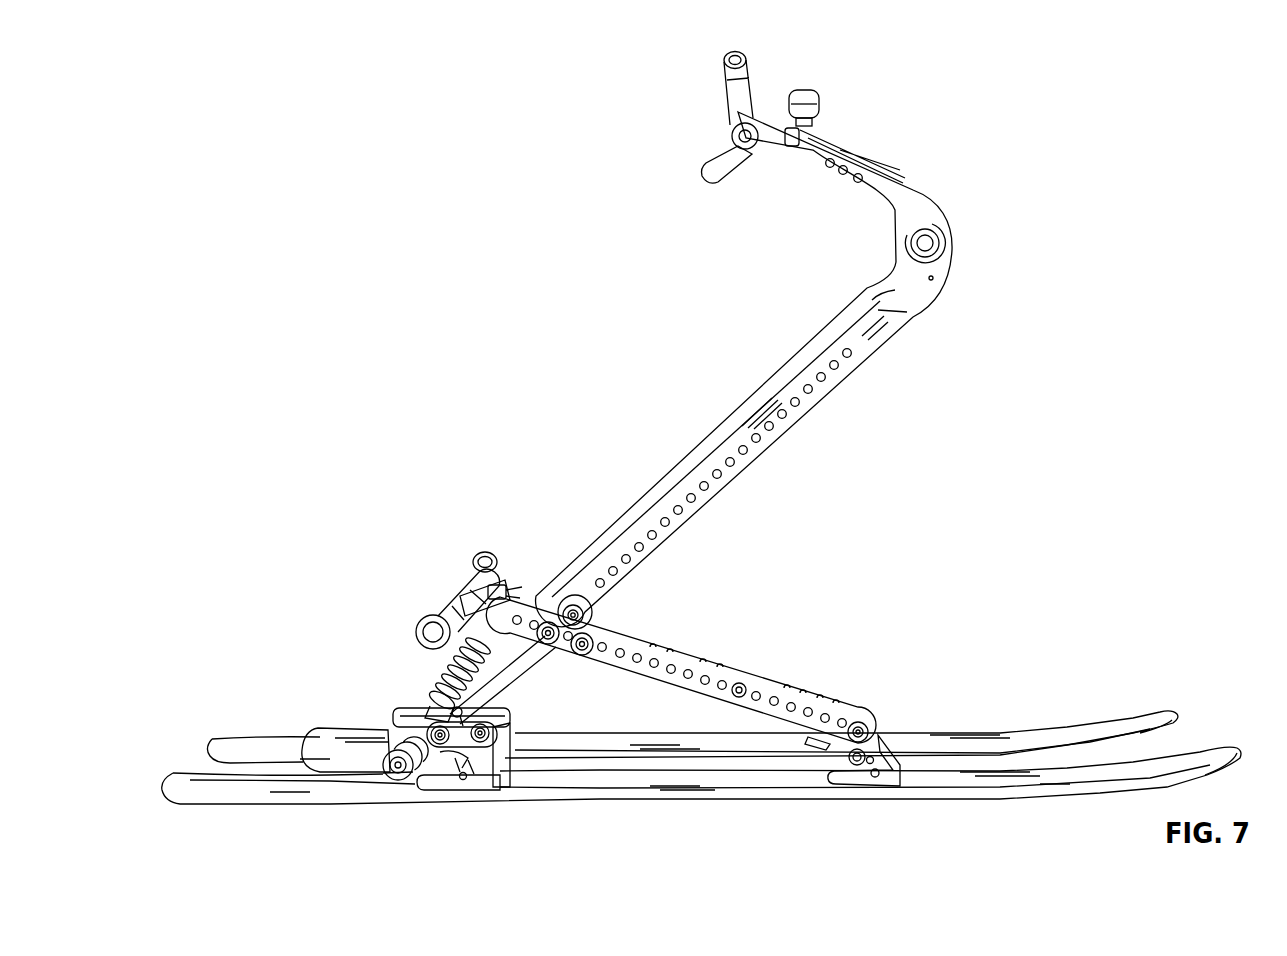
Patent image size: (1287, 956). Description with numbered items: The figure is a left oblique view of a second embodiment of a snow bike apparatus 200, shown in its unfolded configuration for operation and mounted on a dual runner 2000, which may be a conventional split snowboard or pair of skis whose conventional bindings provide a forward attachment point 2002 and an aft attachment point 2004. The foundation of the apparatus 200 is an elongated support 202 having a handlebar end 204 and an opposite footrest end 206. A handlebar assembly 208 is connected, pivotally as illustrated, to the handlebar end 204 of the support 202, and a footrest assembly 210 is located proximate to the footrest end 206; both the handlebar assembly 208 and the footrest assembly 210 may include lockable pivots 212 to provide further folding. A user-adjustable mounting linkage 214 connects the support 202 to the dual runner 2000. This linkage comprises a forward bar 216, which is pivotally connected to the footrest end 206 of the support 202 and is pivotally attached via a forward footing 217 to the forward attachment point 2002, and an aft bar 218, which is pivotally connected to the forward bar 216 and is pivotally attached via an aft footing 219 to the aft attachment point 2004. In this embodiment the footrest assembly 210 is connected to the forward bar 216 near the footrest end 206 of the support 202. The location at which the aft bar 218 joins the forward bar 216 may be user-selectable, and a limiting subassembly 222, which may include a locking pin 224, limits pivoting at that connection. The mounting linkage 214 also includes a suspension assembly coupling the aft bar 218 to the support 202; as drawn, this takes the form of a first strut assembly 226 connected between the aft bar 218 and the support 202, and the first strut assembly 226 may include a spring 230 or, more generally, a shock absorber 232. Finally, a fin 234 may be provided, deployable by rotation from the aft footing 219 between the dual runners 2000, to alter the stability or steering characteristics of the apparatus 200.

The snow bike apparatus 200 is at (550, 188).
The elongated support 202 is at (695, 450).
The handlebar end 204 is at (853, 307).
The footrest end 206 is at (557, 578).
The handlebar assembly 208 is at (885, 175).
The footrest assembly 210 is at (445, 607).
The lockable pivots 212 is at (815, 100).
The user-adjustable mounting linkage 214 is at (838, 518).
The forward bar 216 is at (766, 682).
The forward footing 217 is at (858, 710).
The aft bar 218 is at (513, 660).
The aft footing 219 is at (405, 716).
The limiting subassembly 222 is at (661, 614).
The locking pin 224 is at (598, 614).
The first strut assembly 226 is at (458, 672).
The spring 230 is at (539, 723).
The shock absorber 232 is at (490, 700).
The fin 234 is at (375, 742).
The dual runner 2000 is at (1058, 783).
The forward attachment point 2002 is at (865, 797).
The aft attachment point 2004 is at (445, 780).